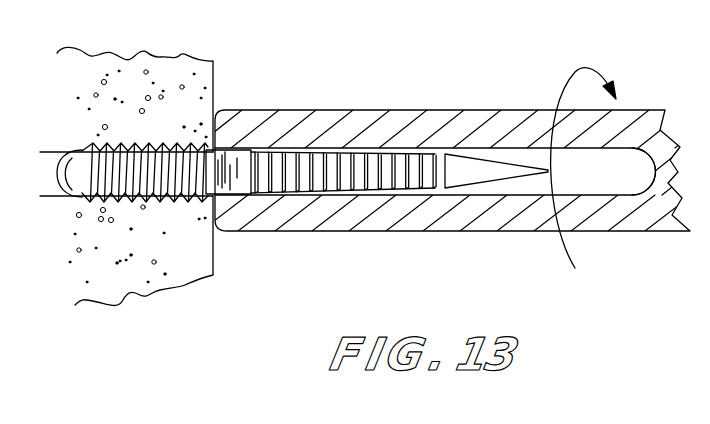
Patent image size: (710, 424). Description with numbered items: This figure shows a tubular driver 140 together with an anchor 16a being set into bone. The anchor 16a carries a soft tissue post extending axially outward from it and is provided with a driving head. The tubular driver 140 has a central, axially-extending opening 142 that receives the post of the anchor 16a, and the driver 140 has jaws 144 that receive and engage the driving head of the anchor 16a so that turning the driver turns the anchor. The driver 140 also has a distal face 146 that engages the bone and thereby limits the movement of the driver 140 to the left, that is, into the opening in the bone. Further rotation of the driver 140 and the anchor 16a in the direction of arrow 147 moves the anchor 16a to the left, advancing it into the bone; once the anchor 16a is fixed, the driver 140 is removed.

The anchor 16a is at (302, 165).
The tubular driver 140 is at (383, 110).
The central, axially-extending opening 142 is at (598, 149).
The jaws 144 is at (244, 151).
The distal face 146 is at (196, 218).
The arrow 147 is at (562, 246).